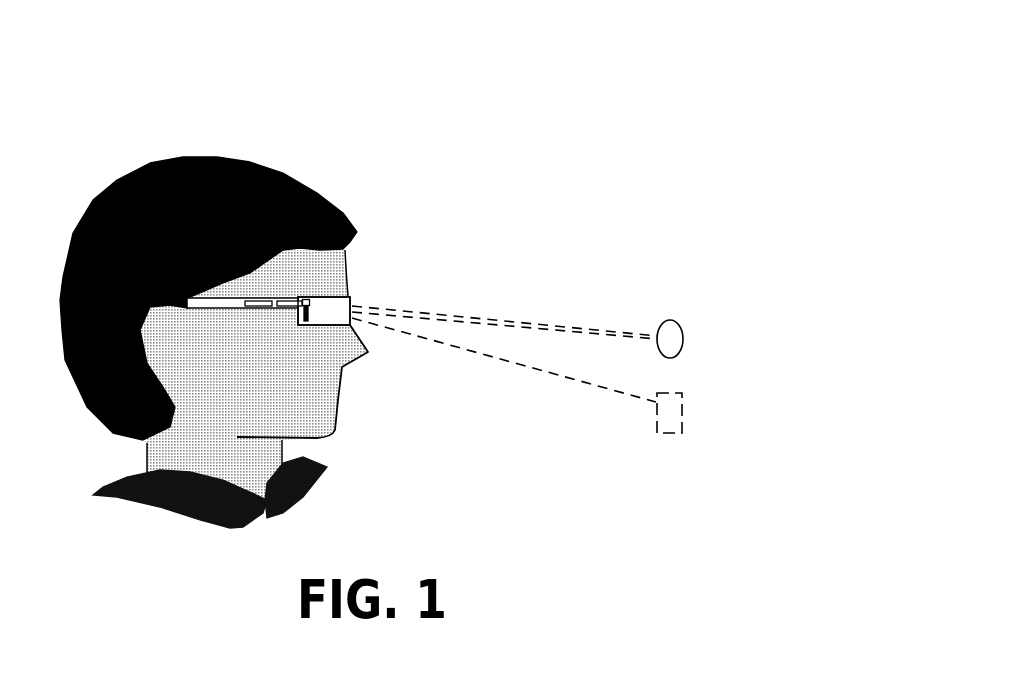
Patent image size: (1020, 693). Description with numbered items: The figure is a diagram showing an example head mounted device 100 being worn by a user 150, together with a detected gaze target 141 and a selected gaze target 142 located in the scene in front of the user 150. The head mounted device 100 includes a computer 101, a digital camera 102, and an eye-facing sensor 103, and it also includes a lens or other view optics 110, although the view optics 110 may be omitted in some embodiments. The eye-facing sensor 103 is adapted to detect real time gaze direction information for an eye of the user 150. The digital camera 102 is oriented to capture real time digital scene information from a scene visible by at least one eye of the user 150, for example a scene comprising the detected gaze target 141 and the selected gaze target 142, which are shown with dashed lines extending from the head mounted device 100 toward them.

The head mounted device 100 is at (396, 243).
The computer 101 is at (268, 300).
The digital camera 102 is at (303, 297).
The eye-facing sensor 103 is at (306, 324).
The view optics 110 is at (348, 296).
The detected gaze target 141 is at (668, 423).
The selected gaze target 142 is at (670, 333).
The user 150 is at (214, 329).